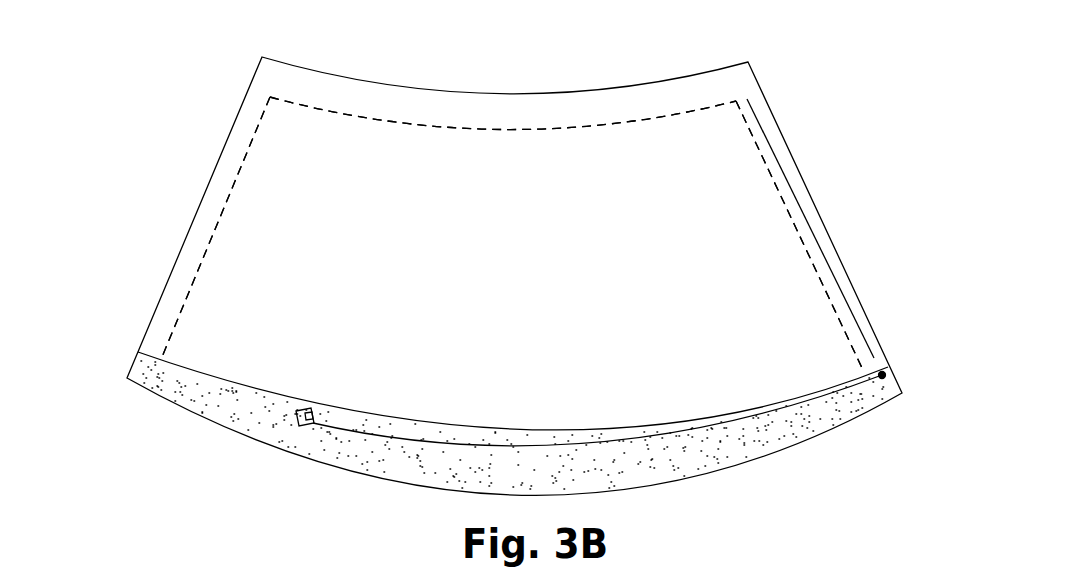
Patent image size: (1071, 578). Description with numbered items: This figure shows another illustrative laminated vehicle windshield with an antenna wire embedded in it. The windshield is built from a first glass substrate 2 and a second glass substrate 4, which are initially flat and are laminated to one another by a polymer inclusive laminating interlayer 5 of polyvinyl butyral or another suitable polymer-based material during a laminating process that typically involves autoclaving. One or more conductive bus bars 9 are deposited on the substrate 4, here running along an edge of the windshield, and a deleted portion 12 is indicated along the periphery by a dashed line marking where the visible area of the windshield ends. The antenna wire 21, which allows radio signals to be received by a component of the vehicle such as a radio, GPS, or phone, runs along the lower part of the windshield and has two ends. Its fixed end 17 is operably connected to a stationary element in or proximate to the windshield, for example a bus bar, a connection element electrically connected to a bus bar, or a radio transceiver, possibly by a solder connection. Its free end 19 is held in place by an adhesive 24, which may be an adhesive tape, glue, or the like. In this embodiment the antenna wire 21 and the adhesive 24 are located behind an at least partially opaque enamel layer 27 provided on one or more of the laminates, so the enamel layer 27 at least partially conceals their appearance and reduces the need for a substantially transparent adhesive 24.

The first glass substrate 2 is at (496, 276).
The second glass substrate 4 is at (240, 333).
The polymer inclusive laminating interlayer 5 is at (303, 208).
The deleted portion 12 is at (248, 148).
The conductive bus bar 9 is at (773, 147).
The enamel layer 27 is at (827, 403).
The antenna wire 21 is at (535, 442).
The adhesive 24 is at (148, 460).
The free end 19 is at (309, 416).
The fixed end 17 is at (882, 378).